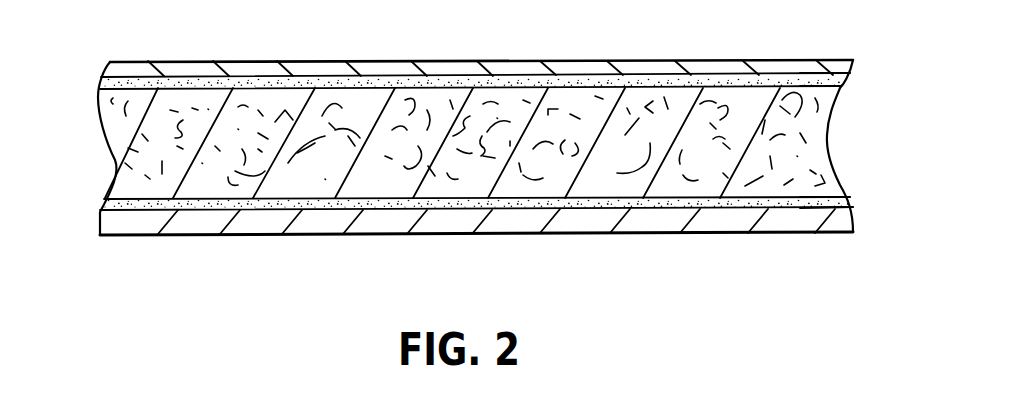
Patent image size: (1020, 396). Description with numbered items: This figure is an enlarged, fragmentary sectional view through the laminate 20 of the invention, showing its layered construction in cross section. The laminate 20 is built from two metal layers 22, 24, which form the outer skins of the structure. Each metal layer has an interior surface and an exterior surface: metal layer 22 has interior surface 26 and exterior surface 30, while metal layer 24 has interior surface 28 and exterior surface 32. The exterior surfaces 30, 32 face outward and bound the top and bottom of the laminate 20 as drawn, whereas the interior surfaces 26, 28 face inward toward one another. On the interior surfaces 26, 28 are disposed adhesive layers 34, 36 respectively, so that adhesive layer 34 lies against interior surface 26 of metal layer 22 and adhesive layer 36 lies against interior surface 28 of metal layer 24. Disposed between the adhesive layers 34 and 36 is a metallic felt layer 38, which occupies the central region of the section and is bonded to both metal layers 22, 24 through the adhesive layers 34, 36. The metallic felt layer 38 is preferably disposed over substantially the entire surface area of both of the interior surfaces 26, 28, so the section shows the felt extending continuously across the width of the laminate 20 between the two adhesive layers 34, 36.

The laminate 20 is at (88, 63).
The metal layer 22 is at (532, 63).
The metal layer 24 is at (363, 223).
The interior surface 26 is at (198, 81).
The interior surface 28 is at (219, 212).
The exterior surface 30 is at (696, 62).
The exterior surface 32 is at (648, 232).
The adhesive layer 34 is at (843, 83).
The adhesive layer 36 is at (845, 199).
The metallic felt layer 38 is at (812, 136).